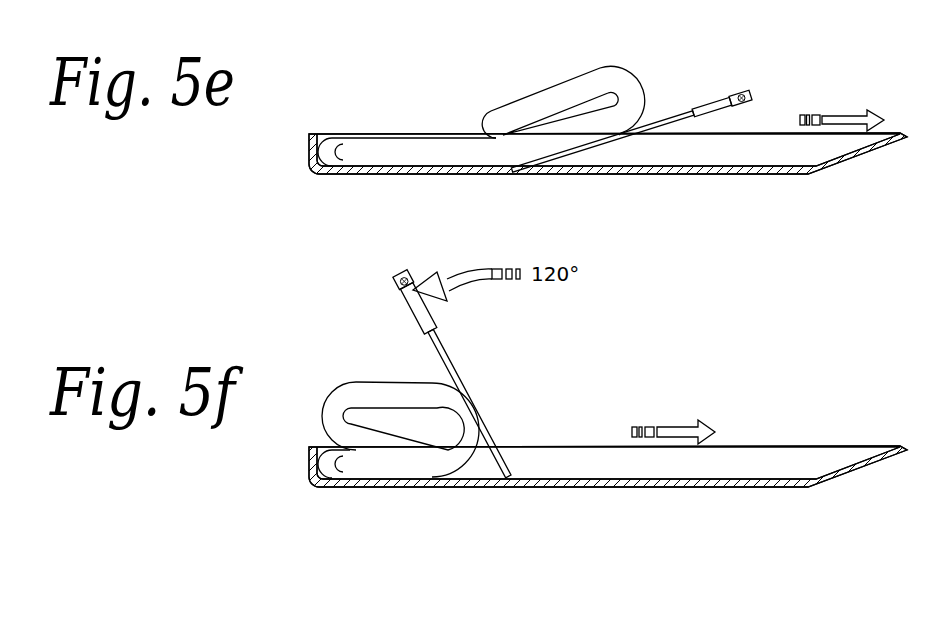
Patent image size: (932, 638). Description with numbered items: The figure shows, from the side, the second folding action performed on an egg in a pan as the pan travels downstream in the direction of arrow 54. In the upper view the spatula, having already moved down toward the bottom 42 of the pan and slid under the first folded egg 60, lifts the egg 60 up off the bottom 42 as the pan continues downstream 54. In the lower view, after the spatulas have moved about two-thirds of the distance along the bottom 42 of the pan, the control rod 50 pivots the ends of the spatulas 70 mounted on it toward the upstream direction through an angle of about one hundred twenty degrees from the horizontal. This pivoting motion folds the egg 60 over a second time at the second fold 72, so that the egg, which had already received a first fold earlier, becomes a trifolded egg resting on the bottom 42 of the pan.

In FIG. 5E, the bottom of the pan 42 is at (748, 158).
In FIG. 5F, the bottom of the pan 42 is at (750, 472).
In FIG. 5E, the control rod 50 is at (736, 92).
In FIG. 5F, the control rod 50 is at (410, 274).
In FIG. 5E, the downstream direction arrow 54 is at (843, 111).
In FIG. 5F, the downstream direction arrow 54 is at (673, 427).
In FIG. 5E, the egg 60 is at (553, 97).
In FIG. 5F, the ends of the spatulas 70 is at (415, 312).
In FIG. 5F, the second fold 72 is at (463, 453).